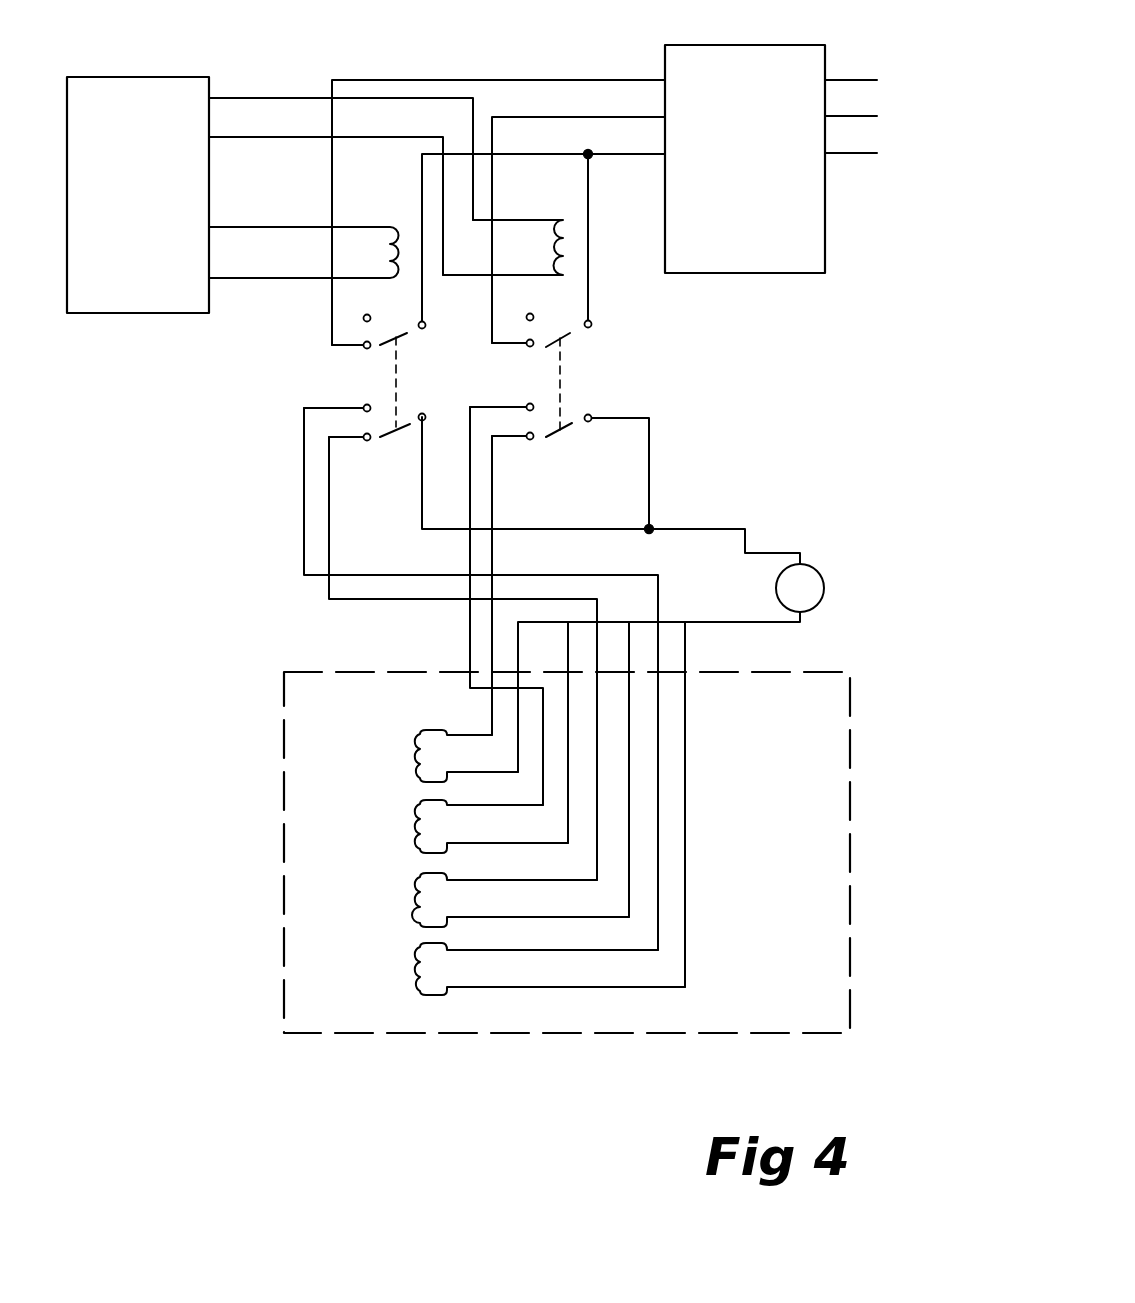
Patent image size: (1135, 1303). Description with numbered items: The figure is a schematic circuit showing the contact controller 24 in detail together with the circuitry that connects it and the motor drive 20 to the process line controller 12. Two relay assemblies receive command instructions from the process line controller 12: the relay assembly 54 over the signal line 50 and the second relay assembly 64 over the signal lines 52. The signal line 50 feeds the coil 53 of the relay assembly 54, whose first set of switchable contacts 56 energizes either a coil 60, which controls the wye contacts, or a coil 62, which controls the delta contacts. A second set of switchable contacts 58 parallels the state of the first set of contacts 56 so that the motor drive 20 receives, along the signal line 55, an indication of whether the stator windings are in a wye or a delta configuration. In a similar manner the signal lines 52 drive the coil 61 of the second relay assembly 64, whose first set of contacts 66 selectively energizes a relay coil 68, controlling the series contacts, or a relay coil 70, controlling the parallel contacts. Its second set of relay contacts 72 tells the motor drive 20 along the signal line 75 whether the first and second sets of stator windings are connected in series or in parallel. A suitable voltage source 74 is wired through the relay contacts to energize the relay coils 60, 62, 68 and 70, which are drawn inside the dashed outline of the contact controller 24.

The process line controller 12 is at (97, 77).
The motor drive 20 is at (707, 45).
The contact controller 24 is at (850, 705).
The signal line 50 is at (262, 137).
The signal lines 52 is at (230, 223).
The coil 53 is at (565, 240).
The relay assembly 54 is at (593, 358).
The signal line 55 is at (573, 117).
The first set of switchable contacts 56 is at (573, 437).
The second set of switchable contacts 58 is at (550, 317).
The coil 60 is at (410, 745).
The coil 61 is at (353, 230).
The coil 62 is at (410, 820).
The second relay assembly 64 is at (343, 372).
The first set of contacts 66 is at (375, 450).
The relay coil 68 is at (410, 893).
The relay coil 70 is at (410, 968).
The second set of relay contacts 72 is at (378, 357).
The voltage source 74 is at (815, 570).
The signal line 75 is at (460, 80).